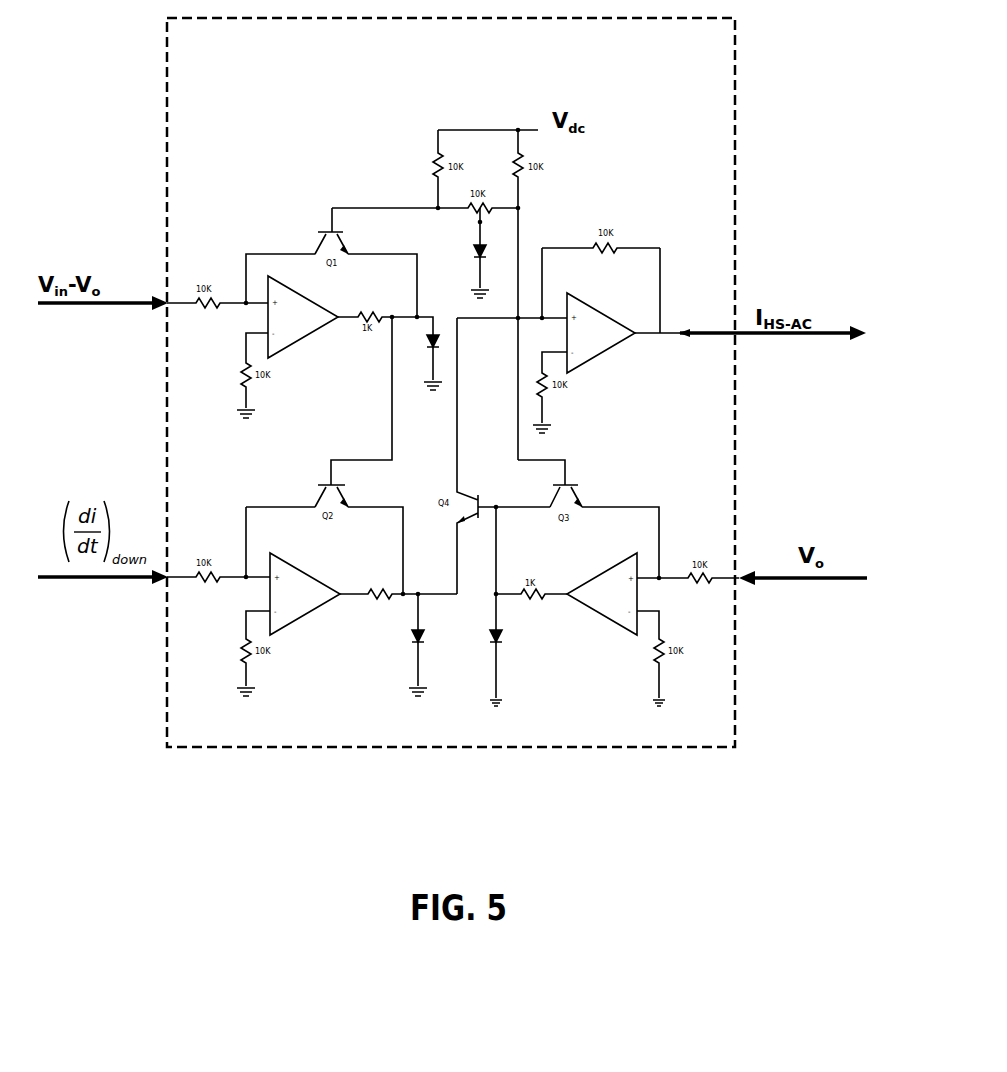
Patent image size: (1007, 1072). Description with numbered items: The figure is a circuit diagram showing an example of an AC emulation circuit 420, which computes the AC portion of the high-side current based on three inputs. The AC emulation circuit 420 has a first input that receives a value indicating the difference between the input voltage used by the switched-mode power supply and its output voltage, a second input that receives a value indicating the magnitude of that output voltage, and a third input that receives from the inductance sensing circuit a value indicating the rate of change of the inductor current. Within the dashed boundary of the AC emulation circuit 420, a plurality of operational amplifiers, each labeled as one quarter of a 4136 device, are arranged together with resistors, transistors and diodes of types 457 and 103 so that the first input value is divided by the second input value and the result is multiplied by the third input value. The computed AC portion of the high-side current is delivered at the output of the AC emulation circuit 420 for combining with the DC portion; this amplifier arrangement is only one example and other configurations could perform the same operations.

The AC emulation circuit 420 is at (245, 88).
The quad operational amplifier (1/4 4136) 4136 is at (452, 455).
The 1N457 diodes D1, D2, D3 457 is at (462, 493).
The LM103 diode D4 103 is at (459, 251).